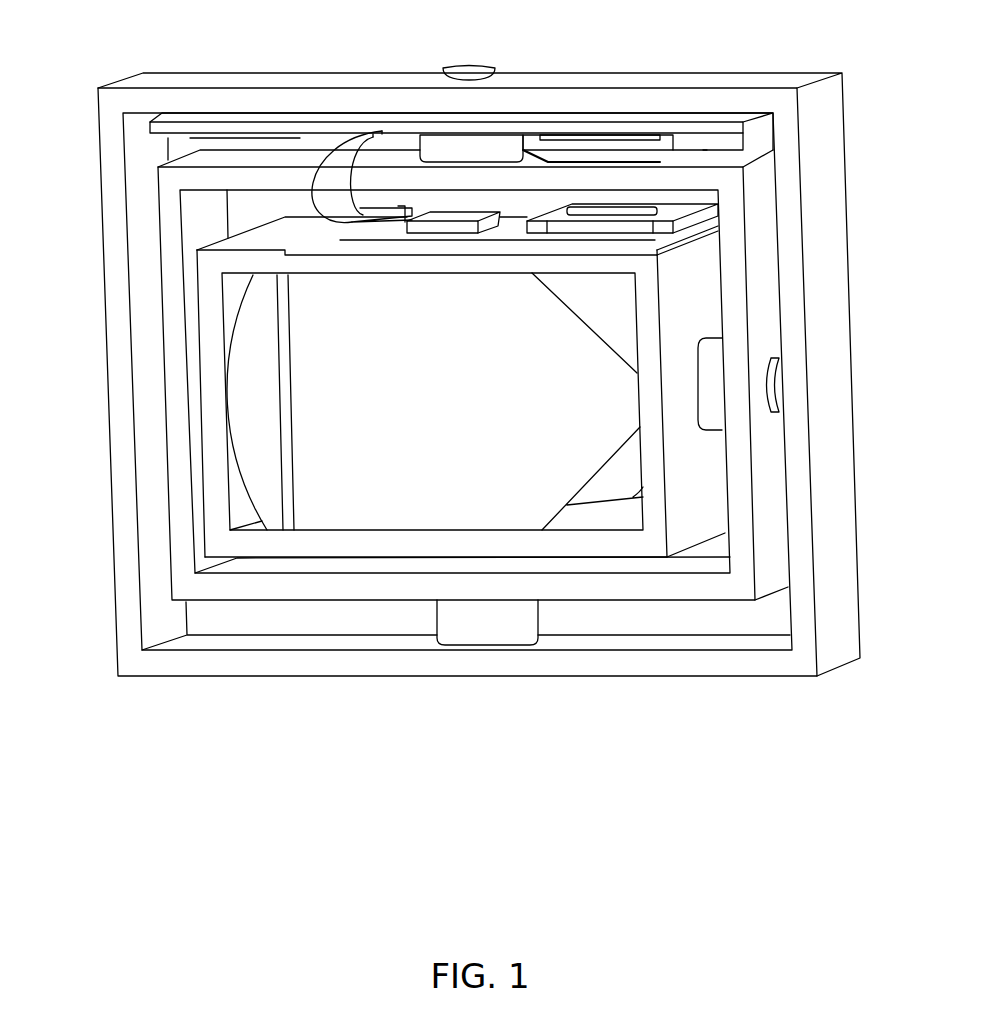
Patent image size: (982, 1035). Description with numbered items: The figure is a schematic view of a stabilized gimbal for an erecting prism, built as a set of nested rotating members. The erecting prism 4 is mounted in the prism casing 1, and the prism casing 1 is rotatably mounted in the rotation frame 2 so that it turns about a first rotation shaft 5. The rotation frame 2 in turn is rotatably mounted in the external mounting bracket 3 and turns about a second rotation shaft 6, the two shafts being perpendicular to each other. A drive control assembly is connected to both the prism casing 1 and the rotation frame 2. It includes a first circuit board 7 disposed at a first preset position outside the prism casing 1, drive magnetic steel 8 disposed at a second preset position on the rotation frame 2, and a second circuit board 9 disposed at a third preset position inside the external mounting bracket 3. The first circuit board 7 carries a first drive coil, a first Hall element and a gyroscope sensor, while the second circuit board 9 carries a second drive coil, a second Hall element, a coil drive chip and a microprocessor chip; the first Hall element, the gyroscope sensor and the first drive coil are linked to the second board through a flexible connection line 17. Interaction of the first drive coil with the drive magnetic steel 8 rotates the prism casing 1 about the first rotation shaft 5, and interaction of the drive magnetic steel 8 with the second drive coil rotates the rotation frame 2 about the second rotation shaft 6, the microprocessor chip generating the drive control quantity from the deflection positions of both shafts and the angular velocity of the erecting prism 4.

The prism casing 1 is at (223, 258).
The rotation frame 2 is at (193, 200).
The external mounting bracket 3 is at (117, 137).
The erecting prism 4 is at (335, 428).
The first rotation shaft 5 is at (712, 392).
The second rotation shaft 6 is at (500, 627).
The first circuit board 7 is at (683, 218).
The drive magnetic steel 8 is at (705, 150).
The second circuit board 9 is at (695, 118).
The flexible connection line 17 is at (345, 140).